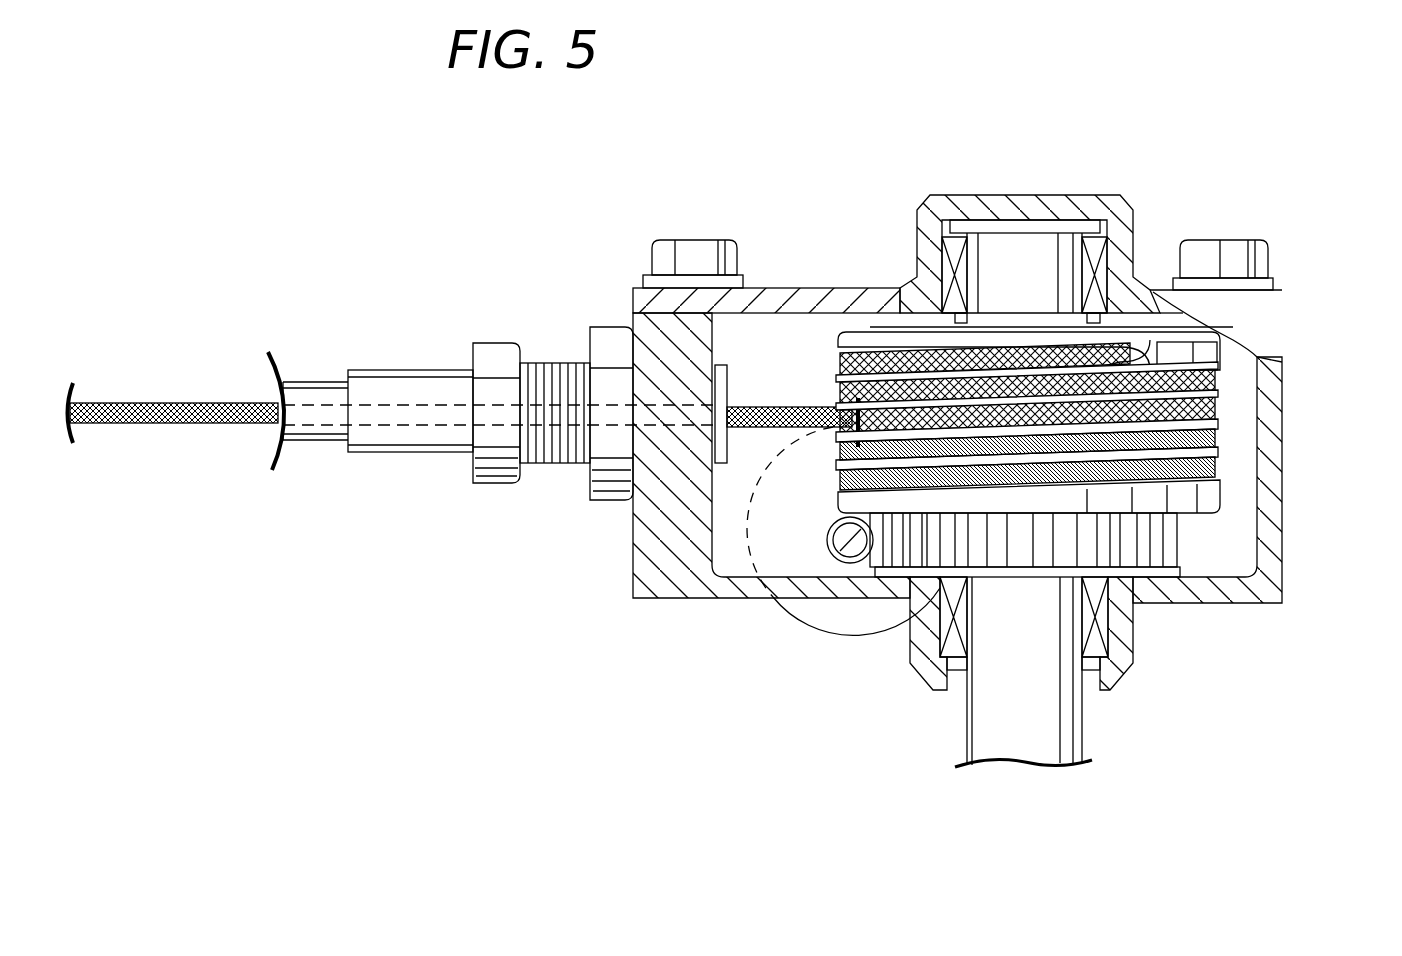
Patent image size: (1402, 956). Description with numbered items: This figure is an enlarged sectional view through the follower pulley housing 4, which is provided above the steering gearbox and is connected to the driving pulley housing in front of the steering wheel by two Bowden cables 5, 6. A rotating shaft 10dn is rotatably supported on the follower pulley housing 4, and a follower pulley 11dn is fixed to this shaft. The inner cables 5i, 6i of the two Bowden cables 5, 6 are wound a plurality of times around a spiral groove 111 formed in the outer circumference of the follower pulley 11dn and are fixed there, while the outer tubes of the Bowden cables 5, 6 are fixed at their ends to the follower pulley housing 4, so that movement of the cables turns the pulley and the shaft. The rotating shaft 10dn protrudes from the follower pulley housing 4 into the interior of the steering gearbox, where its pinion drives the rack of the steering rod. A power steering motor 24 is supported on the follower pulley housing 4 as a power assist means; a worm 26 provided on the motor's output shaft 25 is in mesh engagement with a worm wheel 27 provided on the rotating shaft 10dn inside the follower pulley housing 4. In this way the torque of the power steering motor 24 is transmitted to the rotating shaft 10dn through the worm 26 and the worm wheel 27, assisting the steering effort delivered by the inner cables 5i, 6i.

The follower pulley housing 4 is at (1287, 335).
The Bowden cable 5 is at (463, 370).
The Bowden cable 6 is at (308, 378).
The rotating shaft 10dn is at (1043, 720).
The follower pulley 11dn is at (864, 326).
The inner cable 5i is at (1215, 383).
The spiral groove 111 is at (1215, 442).
The inner cable 6i is at (1215, 470).
The power steering motor 24 is at (790, 617).
The output shaft 25 is at (857, 541).
The worm 26 is at (833, 560).
The worm wheel 27 is at (1147, 543).